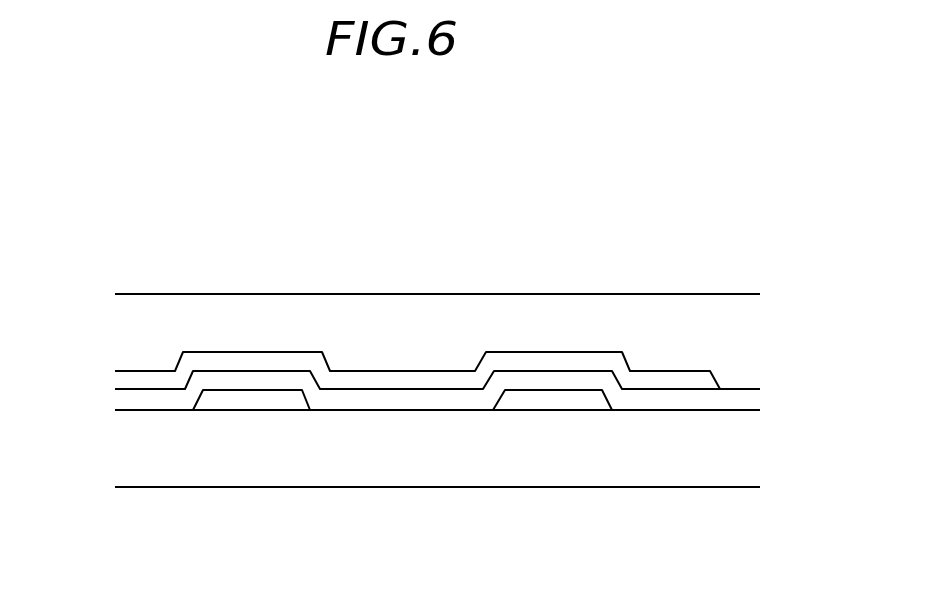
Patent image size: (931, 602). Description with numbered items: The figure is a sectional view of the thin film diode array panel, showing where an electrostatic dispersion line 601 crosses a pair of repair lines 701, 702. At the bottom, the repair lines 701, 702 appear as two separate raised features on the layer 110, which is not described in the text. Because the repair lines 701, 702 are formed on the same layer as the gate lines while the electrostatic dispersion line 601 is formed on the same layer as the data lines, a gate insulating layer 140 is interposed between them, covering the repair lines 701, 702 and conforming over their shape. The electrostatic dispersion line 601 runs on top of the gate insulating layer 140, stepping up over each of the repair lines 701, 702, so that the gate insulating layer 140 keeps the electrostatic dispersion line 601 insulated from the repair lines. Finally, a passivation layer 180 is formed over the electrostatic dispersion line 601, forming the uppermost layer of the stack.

The substrate 110 is at (395, 465).
The gate insulating layer 140 is at (676, 404).
The passivation layer 180 is at (675, 315).
The electrostatic dispersion line 601 is at (534, 360).
The repair line 701 is at (549, 404).
The repair line 702 is at (250, 404).